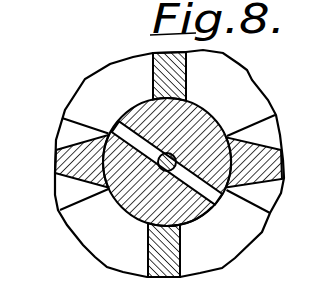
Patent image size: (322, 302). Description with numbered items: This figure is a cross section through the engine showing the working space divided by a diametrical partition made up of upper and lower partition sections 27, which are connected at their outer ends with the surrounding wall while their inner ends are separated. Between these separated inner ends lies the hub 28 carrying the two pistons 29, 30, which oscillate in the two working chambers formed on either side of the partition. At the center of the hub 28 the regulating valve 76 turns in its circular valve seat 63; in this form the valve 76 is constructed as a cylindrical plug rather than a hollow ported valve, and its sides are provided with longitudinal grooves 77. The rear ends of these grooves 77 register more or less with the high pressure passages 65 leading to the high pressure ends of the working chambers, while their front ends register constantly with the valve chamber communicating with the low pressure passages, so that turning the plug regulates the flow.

The partition sections 27 is at (153, 70).
The hub 28 is at (190, 102).
The piston 29 is at (56, 161).
The piston 30 is at (281, 170).
The circular valve seat 63 is at (148, 102).
The high pressure passages 65 is at (116, 118).
The regulating valve 76 is at (195, 224).
The longitudinal grooves 77 is at (273, 147).